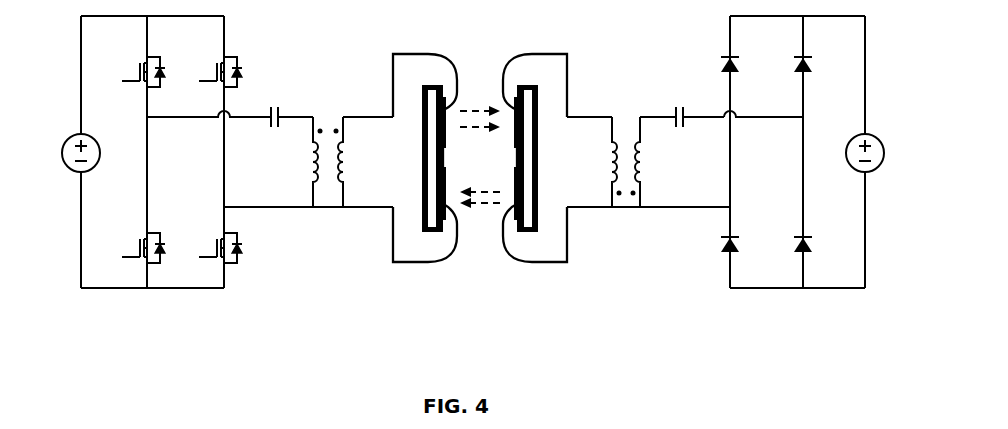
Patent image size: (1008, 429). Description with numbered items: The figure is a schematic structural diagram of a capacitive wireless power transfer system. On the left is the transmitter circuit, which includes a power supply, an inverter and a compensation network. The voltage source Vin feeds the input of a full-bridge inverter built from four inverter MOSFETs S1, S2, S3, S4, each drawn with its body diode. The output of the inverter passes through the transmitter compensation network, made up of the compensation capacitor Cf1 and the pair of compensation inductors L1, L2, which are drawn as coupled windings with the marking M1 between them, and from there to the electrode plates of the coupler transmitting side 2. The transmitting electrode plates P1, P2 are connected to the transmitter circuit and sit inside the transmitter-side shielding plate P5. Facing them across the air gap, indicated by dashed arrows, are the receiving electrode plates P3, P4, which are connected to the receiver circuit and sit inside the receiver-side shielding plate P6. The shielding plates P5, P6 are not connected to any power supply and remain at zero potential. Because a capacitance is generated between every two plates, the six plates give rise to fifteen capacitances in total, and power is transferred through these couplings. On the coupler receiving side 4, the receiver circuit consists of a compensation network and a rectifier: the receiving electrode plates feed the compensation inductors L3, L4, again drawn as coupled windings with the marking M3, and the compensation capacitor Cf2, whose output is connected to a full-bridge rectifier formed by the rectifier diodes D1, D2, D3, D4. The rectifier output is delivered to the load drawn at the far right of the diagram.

The transmitting coupler (primary side resonant transformer with shielded capacitive 2 is at (374, 158).
The receiving coupler (secondary side resonant transformer with shielded capacitive 4 is at (583, 158).
The voltage source Vin is at (68, 152).
The inverter MOSFET S1 is at (136, 64).
The inverter MOSFET S2 is at (213, 64).
The inverter MOSFET S3 is at (136, 240).
The inverter MOSFET S4 is at (213, 240).
The compensation capacitor Cf1 is at (287, 102).
The compensation inductor L1 is at (302, 162).
The compensation inductor L2 is at (353, 162).
The mutual inductance of primary transformer M1 is at (327, 208).
The electrode plate P1 is at (451, 124).
The electrode plate P2 is at (451, 193).
The shielding plate P5 is at (425, 158).
The electrode plate P3 is at (511, 124).
The electrode plate P4 is at (511, 193).
The shielding plate P6 is at (535, 158).
The compensation inductor L3 is at (601, 162).
The compensation inductor L4 is at (650, 162).
The mutual inductance of secondary transformer M3 is at (626, 208).
The compensation capacitor Cf2 is at (682, 102).
The rectifier diode D1 is at (744, 58).
The rectifier diode D2 is at (817, 58).
The rectifier diode D3 is at (744, 236).
The rectifier diode D4 is at (817, 236).